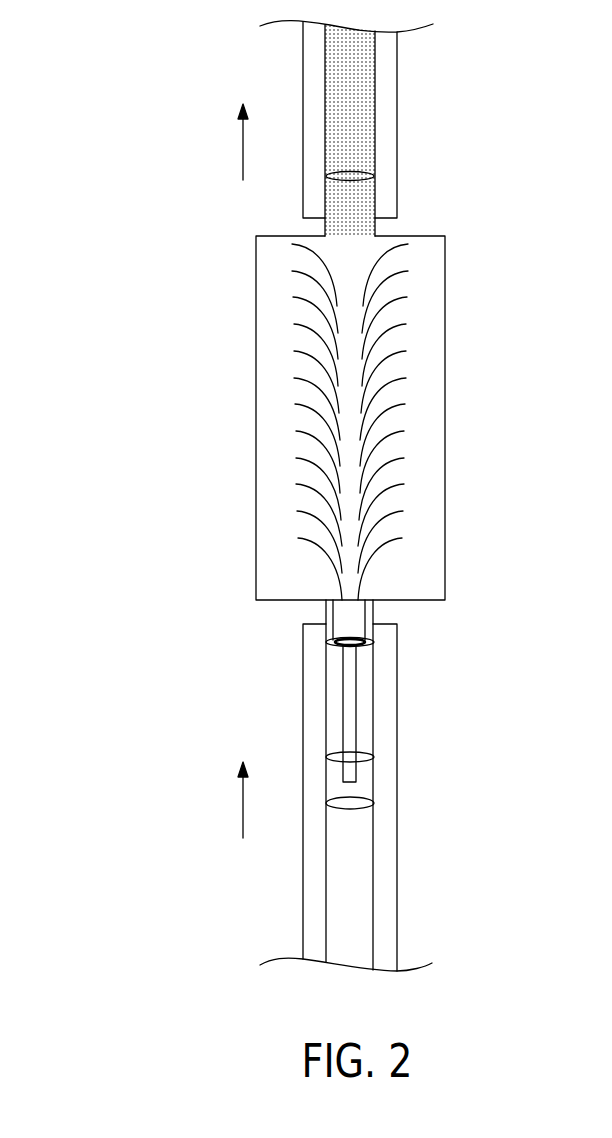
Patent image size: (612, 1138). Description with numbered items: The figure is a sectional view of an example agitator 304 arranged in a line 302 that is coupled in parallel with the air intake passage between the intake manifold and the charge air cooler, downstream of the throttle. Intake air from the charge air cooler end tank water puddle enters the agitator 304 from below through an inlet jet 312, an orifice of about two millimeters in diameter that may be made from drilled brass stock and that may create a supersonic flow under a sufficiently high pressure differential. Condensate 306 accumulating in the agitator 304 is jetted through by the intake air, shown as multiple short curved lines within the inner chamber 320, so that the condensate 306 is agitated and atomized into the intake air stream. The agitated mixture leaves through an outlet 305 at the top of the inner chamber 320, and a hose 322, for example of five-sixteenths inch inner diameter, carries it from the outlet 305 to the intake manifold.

The line 302 is at (303, 932).
The agitator 304 is at (148, 248).
The outlet 305 is at (348, 236).
The condensate 306 is at (325, 553).
The inlet jet 312 is at (358, 756).
The inner chamber 320 is at (273, 383).
The hose 322 is at (397, 112).